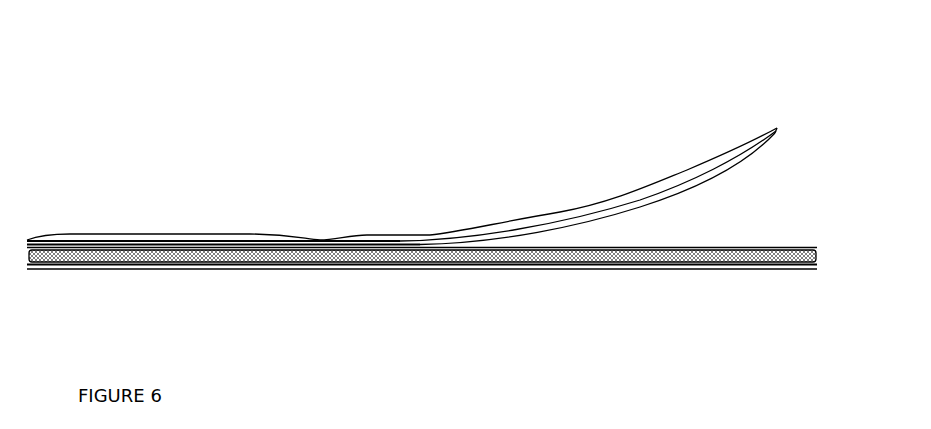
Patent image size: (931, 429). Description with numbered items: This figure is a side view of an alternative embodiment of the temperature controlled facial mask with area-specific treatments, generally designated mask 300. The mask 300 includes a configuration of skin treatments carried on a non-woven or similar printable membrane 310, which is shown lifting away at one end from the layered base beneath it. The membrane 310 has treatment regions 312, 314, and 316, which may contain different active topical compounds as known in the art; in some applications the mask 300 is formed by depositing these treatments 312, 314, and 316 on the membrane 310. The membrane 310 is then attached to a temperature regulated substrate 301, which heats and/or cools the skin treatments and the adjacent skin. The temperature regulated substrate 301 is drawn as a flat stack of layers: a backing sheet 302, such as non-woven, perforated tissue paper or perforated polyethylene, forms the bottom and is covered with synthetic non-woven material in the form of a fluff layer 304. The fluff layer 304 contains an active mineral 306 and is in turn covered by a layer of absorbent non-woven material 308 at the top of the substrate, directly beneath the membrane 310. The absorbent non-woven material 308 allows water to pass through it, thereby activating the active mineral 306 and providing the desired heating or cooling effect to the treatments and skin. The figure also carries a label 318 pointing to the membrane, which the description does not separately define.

The temperature controlled facial mask 300 is at (82, 193).
The temperature regulated substrate 301 is at (755, 272).
The backing sheet 302 is at (233, 268).
The fluff layer 304 is at (365, 257).
The active mineral 306 is at (502, 254).
The absorbent non-woven material 308 is at (767, 247).
The printable membrane 310 is at (768, 128).
The treatment region 312 is at (185, 238).
The treatment region 314 is at (462, 228).
The treatment region 316 is at (687, 172).
The wrinkle region 318 is at (342, 215).